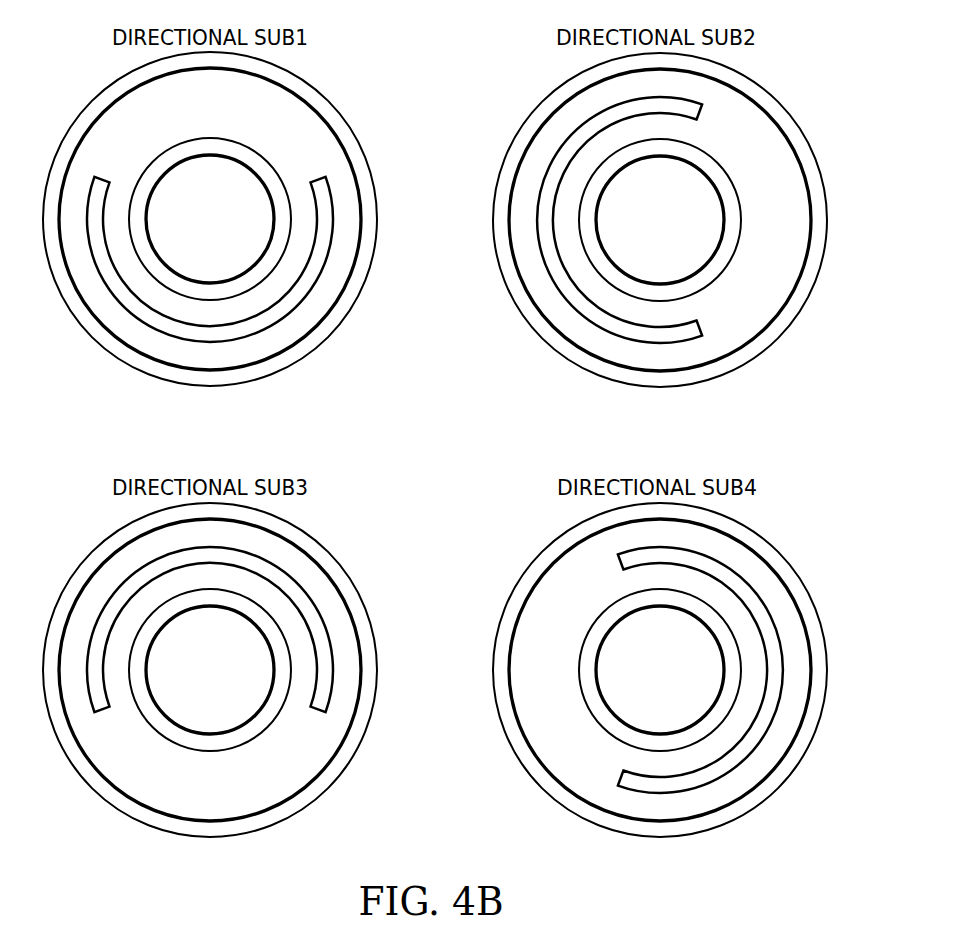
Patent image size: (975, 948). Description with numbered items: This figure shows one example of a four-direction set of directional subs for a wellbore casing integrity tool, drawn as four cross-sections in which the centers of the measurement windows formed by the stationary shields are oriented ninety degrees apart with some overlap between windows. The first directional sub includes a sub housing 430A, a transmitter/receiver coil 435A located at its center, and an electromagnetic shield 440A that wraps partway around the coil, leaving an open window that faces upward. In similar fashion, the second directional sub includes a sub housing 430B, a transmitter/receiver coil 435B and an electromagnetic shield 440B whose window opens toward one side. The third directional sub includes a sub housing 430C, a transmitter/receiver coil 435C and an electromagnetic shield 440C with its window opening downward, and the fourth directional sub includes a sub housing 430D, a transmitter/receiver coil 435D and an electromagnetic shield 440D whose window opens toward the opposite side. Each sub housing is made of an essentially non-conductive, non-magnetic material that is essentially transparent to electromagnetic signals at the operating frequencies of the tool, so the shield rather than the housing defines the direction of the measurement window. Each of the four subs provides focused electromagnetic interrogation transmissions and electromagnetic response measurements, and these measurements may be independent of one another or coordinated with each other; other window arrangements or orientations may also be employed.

The sub housing 430A is at (92, 99).
The transmitter/receiver coil 435A is at (210, 137).
The electromagnetic shield 440A is at (210, 342).
The sub housing 430B is at (808, 92).
The transmitter/receiver coil 435B is at (741, 217).
The electromagnetic shield 440B is at (660, 343).
The sub housing 430C is at (210, 837).
The transmitter/receiver coil 435C is at (210, 751).
The electromagnetic shield 440C is at (134, 570).
The sub housing 430D is at (808, 542).
The transmitter/receiver coil 435D is at (579, 665).
The electromagnetic shield 440D is at (660, 793).